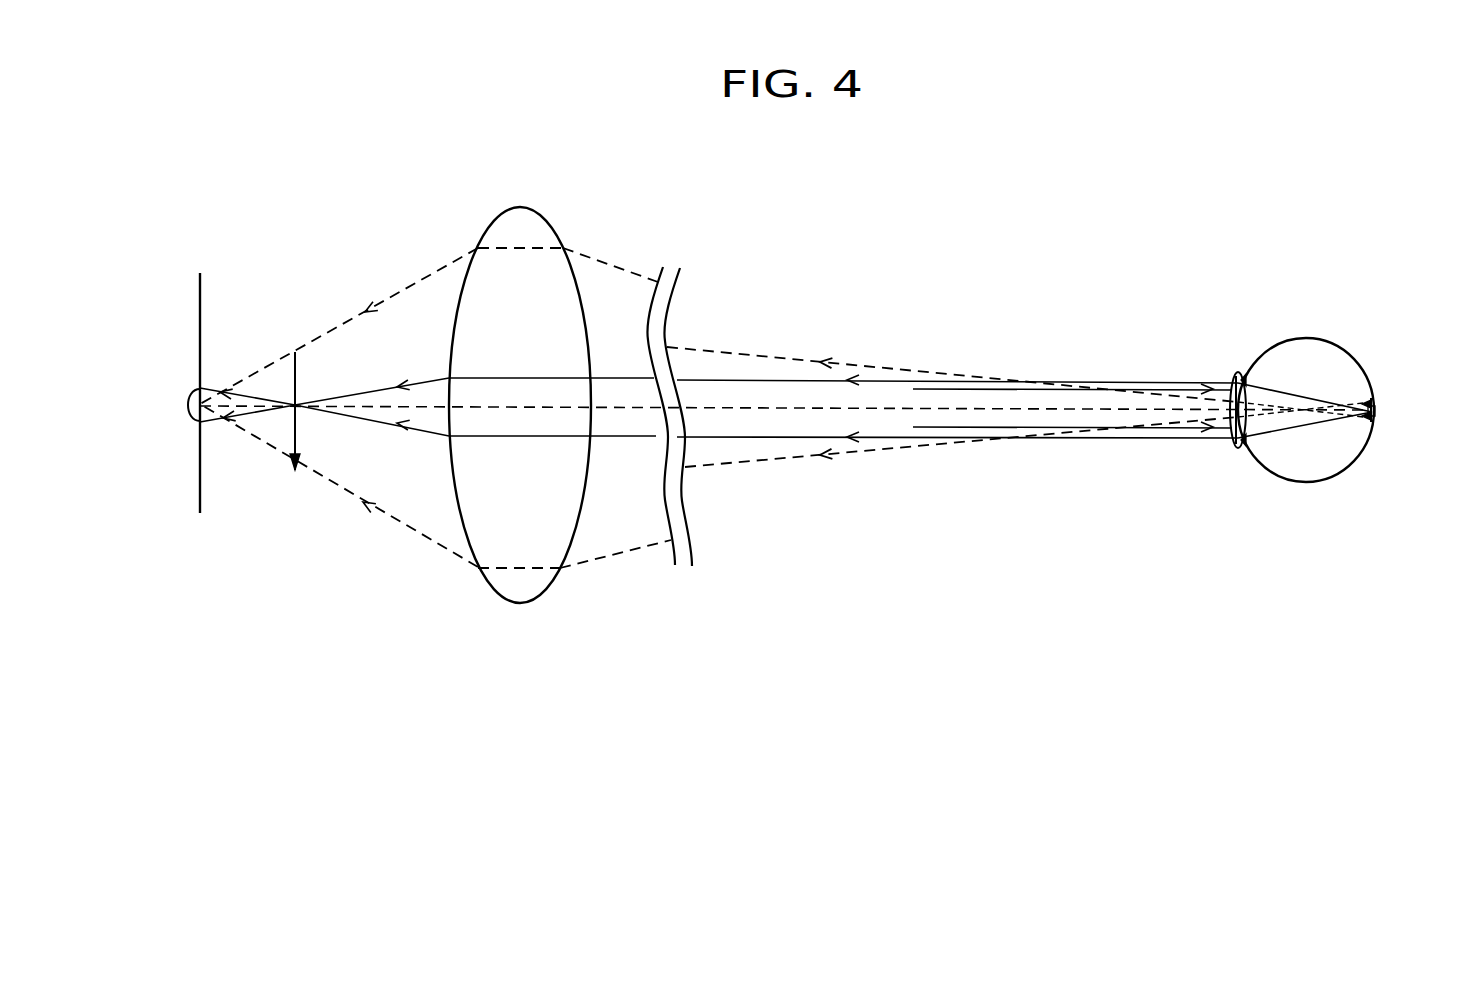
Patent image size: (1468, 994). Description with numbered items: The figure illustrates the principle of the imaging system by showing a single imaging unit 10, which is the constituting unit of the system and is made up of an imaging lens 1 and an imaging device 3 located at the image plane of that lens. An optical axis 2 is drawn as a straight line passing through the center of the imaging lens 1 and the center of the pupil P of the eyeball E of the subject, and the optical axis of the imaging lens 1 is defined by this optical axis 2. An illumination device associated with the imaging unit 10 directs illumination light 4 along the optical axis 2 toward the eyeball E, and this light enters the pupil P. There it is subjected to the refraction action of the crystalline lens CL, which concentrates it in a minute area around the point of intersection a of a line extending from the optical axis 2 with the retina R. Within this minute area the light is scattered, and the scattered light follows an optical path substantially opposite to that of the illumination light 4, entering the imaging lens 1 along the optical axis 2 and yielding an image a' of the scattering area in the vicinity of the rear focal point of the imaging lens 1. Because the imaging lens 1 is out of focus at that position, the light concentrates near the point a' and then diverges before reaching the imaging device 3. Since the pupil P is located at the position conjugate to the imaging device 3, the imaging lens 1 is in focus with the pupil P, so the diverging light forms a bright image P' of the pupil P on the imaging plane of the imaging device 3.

The imaging lens 1 is at (518, 605).
The optical axis 2 is at (903, 412).
The imaging device 3 is at (200, 491).
The illumination light 4 is at (980, 430).
The imaging unit 10 is at (373, 563).
The eyeball E is at (1308, 328).
The crystalline lens CL is at (1237, 373).
The retina R is at (1375, 400).
The pupil P is at (1200, 449).
The point of intersection a is at (1406, 431).
The image of the pupil P' is at (166, 376).
The image of the scattering area a' is at (327, 412).